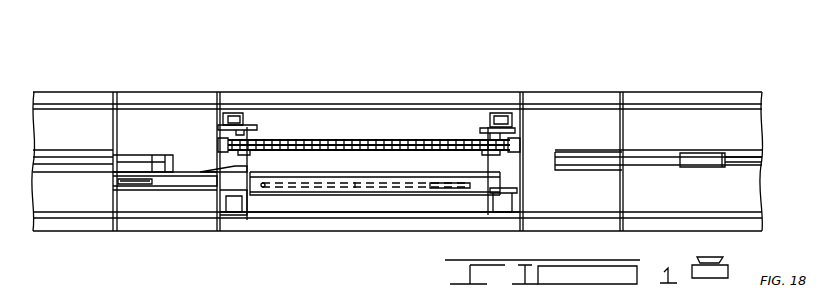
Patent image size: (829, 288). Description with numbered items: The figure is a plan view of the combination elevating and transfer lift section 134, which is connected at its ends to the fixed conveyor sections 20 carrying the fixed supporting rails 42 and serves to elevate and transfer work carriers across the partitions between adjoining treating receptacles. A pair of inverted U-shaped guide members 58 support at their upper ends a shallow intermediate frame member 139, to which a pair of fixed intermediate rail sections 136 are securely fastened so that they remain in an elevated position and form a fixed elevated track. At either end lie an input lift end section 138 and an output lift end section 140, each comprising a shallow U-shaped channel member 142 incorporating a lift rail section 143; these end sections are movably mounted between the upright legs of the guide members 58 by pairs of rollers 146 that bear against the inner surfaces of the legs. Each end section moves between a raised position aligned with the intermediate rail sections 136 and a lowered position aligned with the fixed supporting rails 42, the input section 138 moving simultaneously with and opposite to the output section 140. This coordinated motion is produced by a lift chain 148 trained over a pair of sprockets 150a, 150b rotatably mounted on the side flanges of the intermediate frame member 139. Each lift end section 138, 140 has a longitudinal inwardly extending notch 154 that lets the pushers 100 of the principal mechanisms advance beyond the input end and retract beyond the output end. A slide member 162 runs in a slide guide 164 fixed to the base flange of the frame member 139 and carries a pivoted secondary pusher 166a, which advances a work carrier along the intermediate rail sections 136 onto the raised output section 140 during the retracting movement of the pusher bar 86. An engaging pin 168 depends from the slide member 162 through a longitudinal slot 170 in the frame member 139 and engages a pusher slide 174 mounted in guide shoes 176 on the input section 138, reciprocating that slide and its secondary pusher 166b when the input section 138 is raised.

The fixed conveyor section 20 is at (76, 241).
The fixed supporting rail 42 is at (55, 100).
The inverted U-shaped guide member 58 is at (268, 109).
The pusher bar 86 is at (47, 157).
The pusher 100 is at (112, 178).
The lift section 134 is at (342, 100).
The fixed intermediate rail section 136 is at (392, 100).
The input lift end section 138 is at (180, 91).
The intermediate frame member 139 is at (311, 91).
The output lift end section 140 is at (562, 91).
The shallow U-shaped channel member 142 is at (133, 118).
The lift rail section 143 is at (160, 100).
The roller 146 is at (233, 113).
The lift chain 148 is at (328, 142).
The sprocket 150a is at (250, 136).
The sprocket 150b is at (490, 131).
The notch 154 is at (160, 158).
The slide member 162 is at (392, 180).
The slide guide 164 is at (272, 196).
The secondary pusher 166a is at (358, 194).
The secondary pusher 166b is at (114, 186).
The engaging pin 168 is at (265, 184).
The longitudinal slot 170 is at (432, 190).
The pusher slide 174 is at (223, 164).
The guide shoe 176 is at (136, 191).